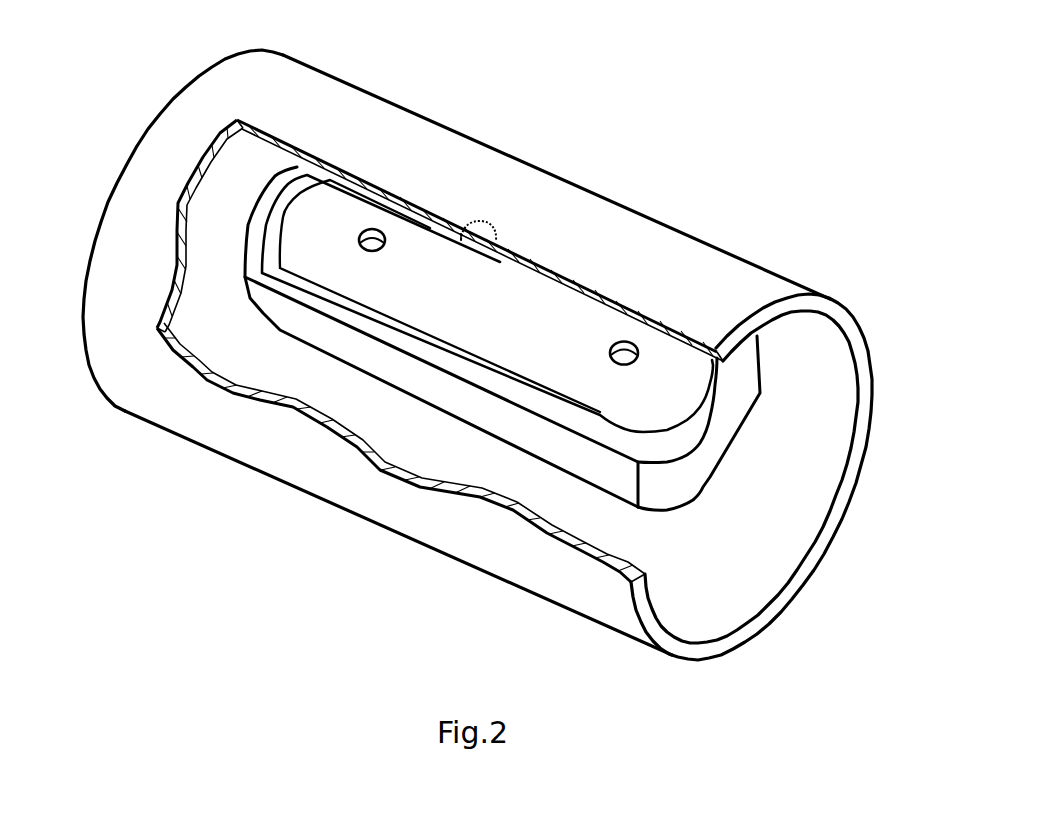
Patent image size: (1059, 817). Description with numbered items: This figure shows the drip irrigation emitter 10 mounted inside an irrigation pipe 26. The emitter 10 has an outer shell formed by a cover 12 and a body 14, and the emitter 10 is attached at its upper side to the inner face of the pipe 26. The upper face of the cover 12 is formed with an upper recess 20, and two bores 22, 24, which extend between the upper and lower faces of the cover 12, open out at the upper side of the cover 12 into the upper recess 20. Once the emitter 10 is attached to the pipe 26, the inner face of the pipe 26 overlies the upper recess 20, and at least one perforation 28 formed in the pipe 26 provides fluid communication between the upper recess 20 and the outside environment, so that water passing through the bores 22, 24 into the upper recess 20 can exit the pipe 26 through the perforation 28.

The drip irrigation emitter 10 is at (280, 343).
The cover 12 is at (330, 231).
The body 14 is at (672, 487).
The upper recess 20 is at (442, 252).
The bore 22 is at (639, 348).
The bore 24 is at (385, 235).
The irrigation pipe 26 is at (748, 262).
The perforation 28 is at (494, 232).